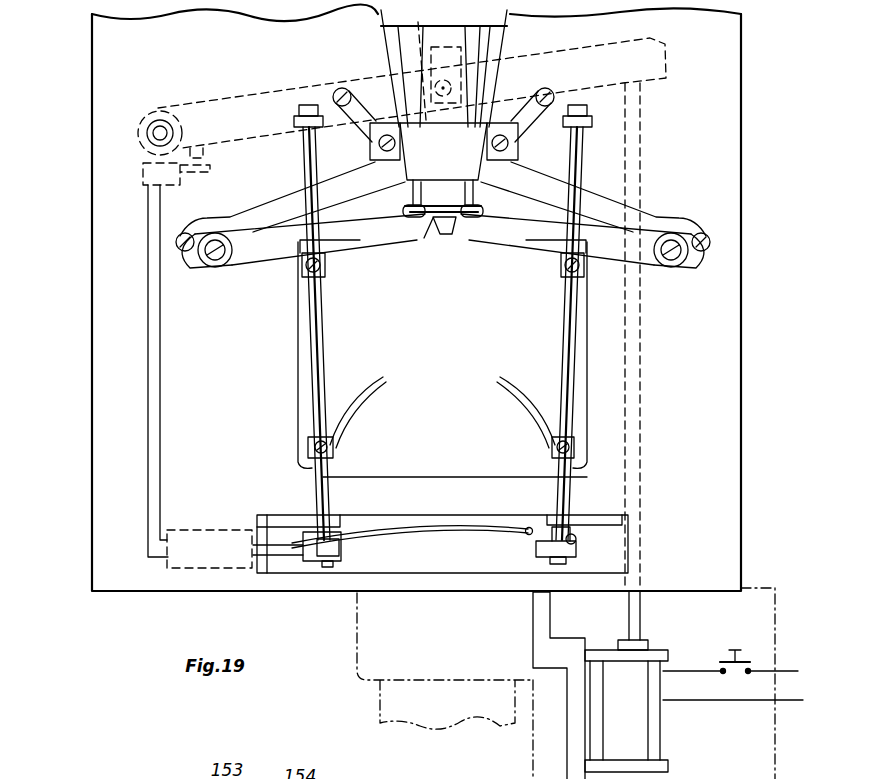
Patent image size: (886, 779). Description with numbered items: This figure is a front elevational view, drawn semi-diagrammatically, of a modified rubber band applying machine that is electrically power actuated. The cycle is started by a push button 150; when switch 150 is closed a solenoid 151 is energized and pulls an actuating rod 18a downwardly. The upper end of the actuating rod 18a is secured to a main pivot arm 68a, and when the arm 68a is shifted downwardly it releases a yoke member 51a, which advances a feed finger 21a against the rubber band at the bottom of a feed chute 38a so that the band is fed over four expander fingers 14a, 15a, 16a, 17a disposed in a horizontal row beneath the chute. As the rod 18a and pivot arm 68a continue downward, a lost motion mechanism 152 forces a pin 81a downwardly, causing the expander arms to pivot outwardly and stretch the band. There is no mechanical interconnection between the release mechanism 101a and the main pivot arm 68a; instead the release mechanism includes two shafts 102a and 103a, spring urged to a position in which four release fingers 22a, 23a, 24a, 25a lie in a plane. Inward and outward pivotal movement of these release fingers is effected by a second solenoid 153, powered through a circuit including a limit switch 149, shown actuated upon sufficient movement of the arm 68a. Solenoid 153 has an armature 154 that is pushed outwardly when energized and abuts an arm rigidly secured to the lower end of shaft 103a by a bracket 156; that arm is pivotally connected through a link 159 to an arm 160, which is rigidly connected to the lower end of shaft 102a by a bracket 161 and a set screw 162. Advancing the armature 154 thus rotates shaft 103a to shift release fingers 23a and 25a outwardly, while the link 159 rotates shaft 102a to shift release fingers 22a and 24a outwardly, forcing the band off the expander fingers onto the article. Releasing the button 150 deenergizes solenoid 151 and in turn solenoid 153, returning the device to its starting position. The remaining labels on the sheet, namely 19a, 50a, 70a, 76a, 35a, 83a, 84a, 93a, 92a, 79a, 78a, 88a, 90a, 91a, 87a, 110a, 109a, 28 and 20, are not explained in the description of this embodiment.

The cabinet frame 19a is at (728, 337).
The lost motion mechanism 152 is at (412, 48).
The yoke member 51a is at (502, 46).
The drive member 50a is at (382, 72).
The feed chute 38a is at (482, 79).
The pin 81a is at (444, 151).
The feed finger 21a is at (444, 200).
The expander finger 17a is at (410, 214).
The expander finger 14a is at (477, 214).
The expander finger 15a is at (452, 230).
The expander finger 16a is at (428, 240).
The direction of movement 76a is at (447, 270).
The opening 35a is at (446, 327).
The left link 84a is at (363, 114).
The right link 83a is at (556, 90).
The main pivot arm 68a is at (216, 104).
The pivot roller 70a is at (160, 126).
The limit switch 149 is at (143, 183).
The left upper link 93a is at (252, 222).
The left arm 79a is at (266, 252).
The left pivot 88a is at (192, 262).
The left end screw 91a is at (222, 268).
The release finger 23a is at (342, 250).
The release mechanism 101a is at (298, 356).
The shaft 103a is at (325, 344).
The release finger 25a is at (388, 388).
The right upper link 92a is at (664, 222).
The right arm 78a is at (608, 252).
The right pivot 90a is at (671, 267).
The right end screw 87a is at (700, 252).
The release finger 22a is at (542, 248).
The shaft 102a is at (574, 378).
The release finger 24a is at (502, 384).
The actuating rod 18a is at (642, 401).
The base plate left bar 110a is at (291, 516).
The base plate right bar 109a is at (598, 516).
The armature 154 is at (277, 557).
The second solenoid 153 is at (228, 528).
The bracket 156 is at (343, 558).
The link 159 is at (440, 533).
The arm 160 is at (524, 538).
The bracket 161 is at (568, 556).
The set screw 162 is at (577, 538).
The solenoid 151 is at (662, 733).
The push button 150 is at (735, 650).
The conveyor 28 is at (380, 707).
The section line 20- 20 is at (88, 527).